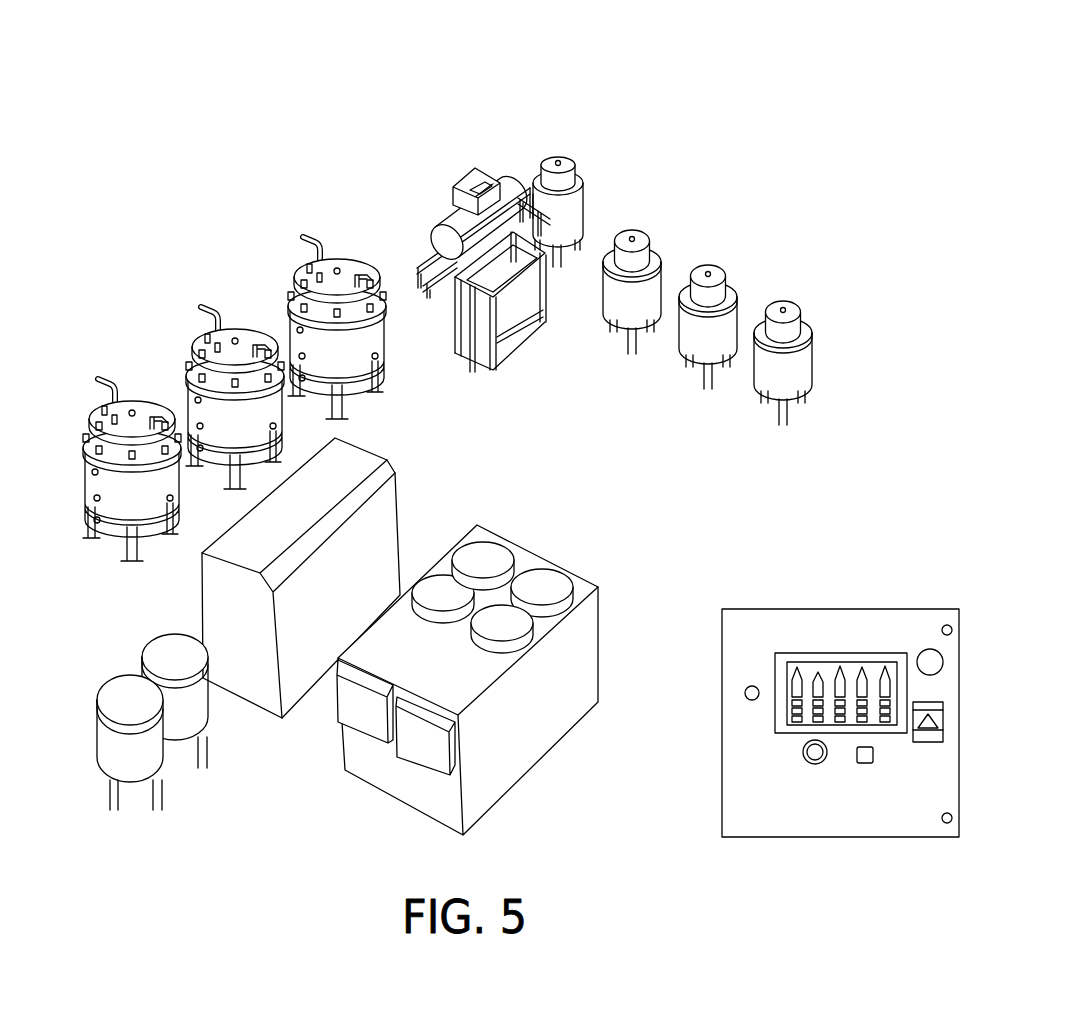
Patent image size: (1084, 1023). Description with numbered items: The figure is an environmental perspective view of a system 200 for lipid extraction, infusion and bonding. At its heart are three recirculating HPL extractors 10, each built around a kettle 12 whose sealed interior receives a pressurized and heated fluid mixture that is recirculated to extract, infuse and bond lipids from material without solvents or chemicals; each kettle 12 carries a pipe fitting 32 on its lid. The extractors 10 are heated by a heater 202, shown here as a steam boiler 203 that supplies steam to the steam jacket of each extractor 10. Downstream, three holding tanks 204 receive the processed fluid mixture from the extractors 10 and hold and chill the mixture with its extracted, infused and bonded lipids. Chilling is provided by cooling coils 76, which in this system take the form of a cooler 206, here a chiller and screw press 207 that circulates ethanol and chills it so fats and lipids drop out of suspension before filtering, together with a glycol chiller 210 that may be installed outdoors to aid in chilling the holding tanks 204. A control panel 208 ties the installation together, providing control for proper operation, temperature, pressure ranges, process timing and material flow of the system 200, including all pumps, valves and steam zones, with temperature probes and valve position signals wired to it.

The system for lipid extraction, infusion and/or bonding 200 is at (692, 80).
The recirculating HPL extractor 10 is at (241, 354).
The kettle 12 is at (93, 485).
The pipe 32 is at (105, 382).
The cooling coils 76 is at (547, 132).
The holding tank 204 is at (648, 230).
The cooler 206 is at (483, 228).
The chiller and screw press 207 is at (470, 157).
The glycol chiller 210 is at (555, 540).
The heater 202 is at (125, 700).
The steam boiler 203 is at (128, 670).
The control panel 208 is at (832, 609).